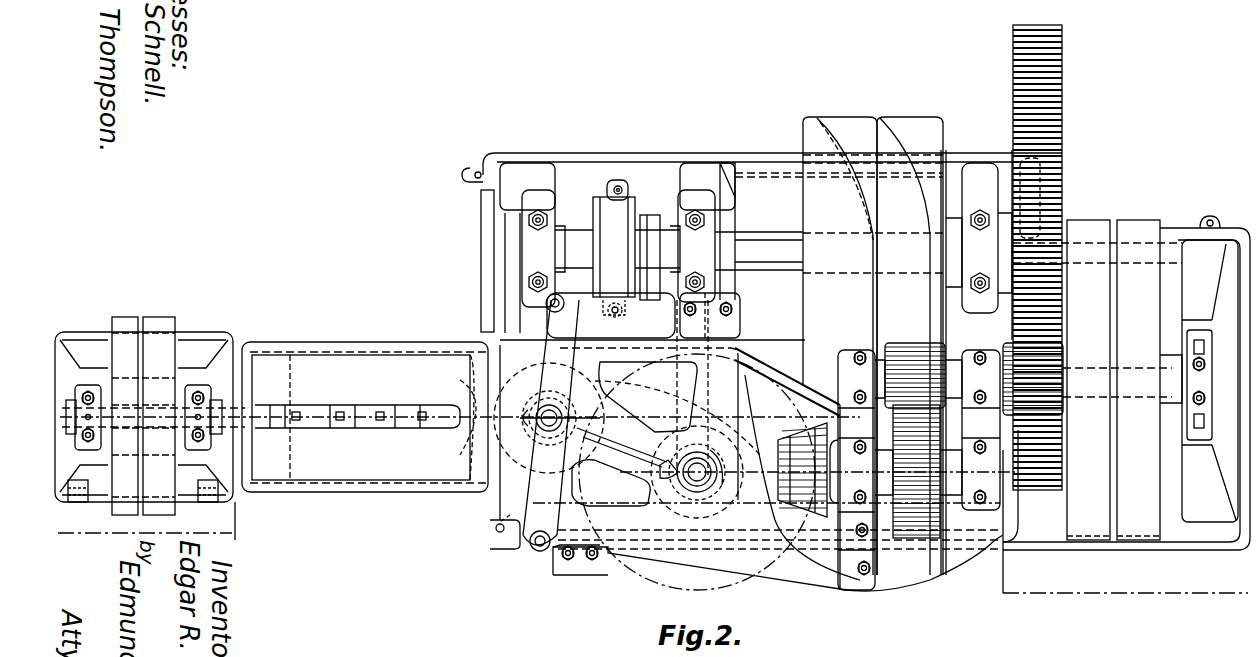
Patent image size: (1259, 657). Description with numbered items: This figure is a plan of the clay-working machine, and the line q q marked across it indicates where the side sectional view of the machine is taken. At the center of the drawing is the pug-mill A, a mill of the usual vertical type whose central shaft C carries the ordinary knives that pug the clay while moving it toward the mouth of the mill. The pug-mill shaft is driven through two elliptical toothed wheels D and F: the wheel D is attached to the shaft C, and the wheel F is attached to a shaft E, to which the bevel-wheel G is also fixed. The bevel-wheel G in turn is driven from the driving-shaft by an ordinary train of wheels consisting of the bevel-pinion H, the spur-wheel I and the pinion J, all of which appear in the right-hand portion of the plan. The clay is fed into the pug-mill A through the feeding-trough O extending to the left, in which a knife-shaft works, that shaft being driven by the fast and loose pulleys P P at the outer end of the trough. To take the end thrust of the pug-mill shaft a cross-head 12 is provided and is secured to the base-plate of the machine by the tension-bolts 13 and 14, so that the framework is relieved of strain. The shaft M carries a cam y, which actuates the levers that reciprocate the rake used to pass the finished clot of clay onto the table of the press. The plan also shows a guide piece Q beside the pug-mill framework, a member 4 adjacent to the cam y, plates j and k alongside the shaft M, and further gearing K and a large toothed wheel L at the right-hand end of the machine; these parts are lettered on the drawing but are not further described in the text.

The fast and loose pulleys P is at (150, 416).
The feeding-trough O is at (365, 417).
The guide bar Q is at (481, 276).
The eccentric pulley 4 is at (617, 230).
The cam y is at (650, 228).
The tension-bolt 13 is at (590, 303).
The cross-head 12 is at (595, 416).
The central shaft C is at (560, 418).
The pug-mill A is at (648, 397).
The shaft E is at (692, 472).
The elliptical toothed wheel F is at (628, 508).
The elliptical toothed wheel D is at (520, 470).
The tension-bolt 14 is at (530, 543).
The bevel-wheel G is at (697, 474).
The shaft M is at (769, 252).
The cam plate j is at (910, 346).
The cam plate k is at (840, 346).
The pinion J is at (900, 360).
The spur-wheel I is at (916, 471).
The bevel-pinion H is at (808, 447).
The pinion K is at (1040, 385).
The large gear wheel L is at (1045, 165).
The section line q is at (653, 537).